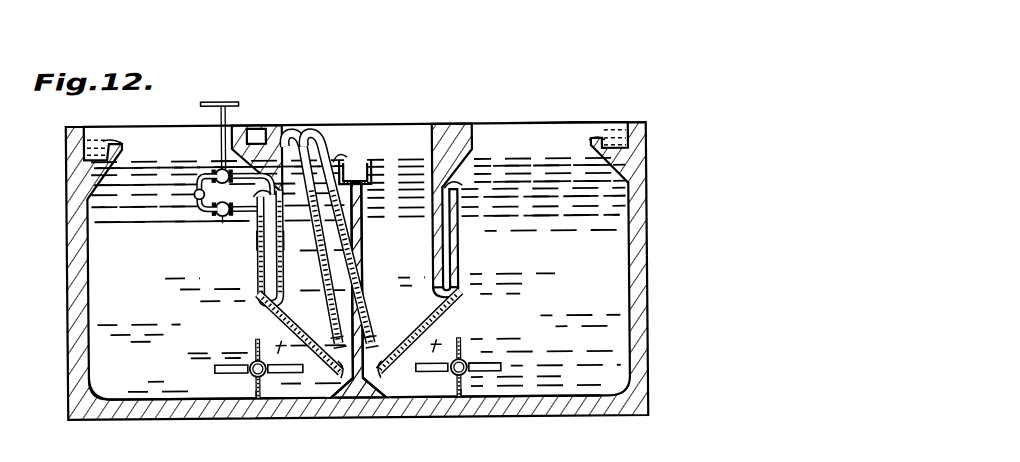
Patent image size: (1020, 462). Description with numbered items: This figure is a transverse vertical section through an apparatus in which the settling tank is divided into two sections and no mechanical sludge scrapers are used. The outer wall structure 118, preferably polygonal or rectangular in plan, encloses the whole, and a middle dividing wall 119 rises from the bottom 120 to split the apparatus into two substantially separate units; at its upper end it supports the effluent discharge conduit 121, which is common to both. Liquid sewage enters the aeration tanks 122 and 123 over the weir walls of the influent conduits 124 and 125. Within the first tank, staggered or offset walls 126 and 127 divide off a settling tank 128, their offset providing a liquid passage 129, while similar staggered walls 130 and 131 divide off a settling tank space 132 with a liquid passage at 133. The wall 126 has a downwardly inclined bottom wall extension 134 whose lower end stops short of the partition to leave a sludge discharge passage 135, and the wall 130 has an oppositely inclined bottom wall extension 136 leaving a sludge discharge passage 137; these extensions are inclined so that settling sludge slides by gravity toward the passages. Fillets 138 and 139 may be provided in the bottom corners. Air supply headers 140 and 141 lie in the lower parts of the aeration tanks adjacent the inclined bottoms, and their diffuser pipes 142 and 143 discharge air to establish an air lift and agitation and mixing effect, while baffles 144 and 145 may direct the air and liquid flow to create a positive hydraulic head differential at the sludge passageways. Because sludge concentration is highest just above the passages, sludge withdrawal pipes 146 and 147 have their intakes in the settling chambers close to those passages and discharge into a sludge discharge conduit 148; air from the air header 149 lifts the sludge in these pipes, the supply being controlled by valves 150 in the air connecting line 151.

The outer wall structure 118 is at (641, 266).
The middle dividing wall 119 is at (363, 234).
The bottom 120 is at (550, 405).
The effluent discharge conduit 121 is at (349, 170).
The aeration tank 122 is at (138, 165).
The aeration tank 123 is at (540, 162).
The influent conduit 124 is at (107, 150).
The influent conduit 125 is at (612, 140).
The staggered wall 126 is at (257, 269).
The offset wall 127 is at (279, 252).
The settling tank 128 is at (320, 140).
The liquid passage 129 is at (257, 251).
The staggered wall 130 is at (460, 266).
The offset wall 131 is at (397, 262).
The settling tank space 132 is at (412, 162).
The liquid passage 133 is at (445, 241).
The inclined bottom wall extension 134 is at (270, 313).
The sludge discharge passage 135 is at (333, 403).
The inclined bottom wall extension 136 is at (441, 309).
The sludge discharge passage 137 is at (378, 405).
The fillet 138 is at (115, 403).
The fillet 139 is at (357, 420).
The air supply header 140 is at (240, 405).
The air supply header 141 is at (462, 404).
The diffuser pipe 142 is at (205, 388).
The diffuser pipe 143 is at (505, 367).
The baffle 144 is at (258, 403).
The baffle 145 is at (476, 360).
The sludge withdrawal pipe 146 is at (330, 311).
The sludge withdrawal pipe 147 is at (371, 314).
The sludge discharge conduit 148 is at (250, 137).
The air header 149 is at (198, 198).
The valve 150 is at (225, 213).
The air connecting line 151 is at (219, 171).